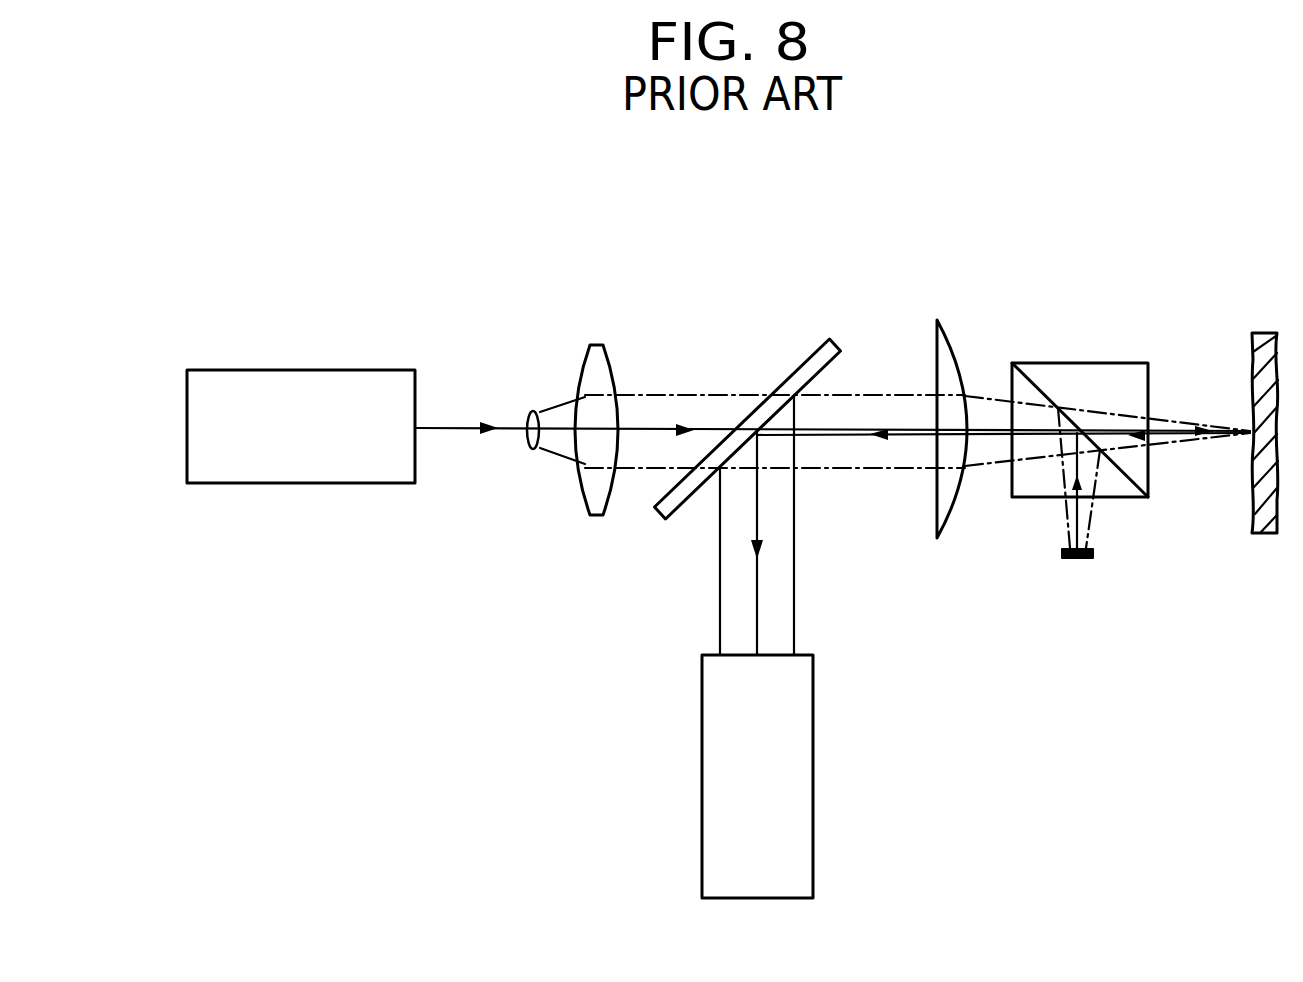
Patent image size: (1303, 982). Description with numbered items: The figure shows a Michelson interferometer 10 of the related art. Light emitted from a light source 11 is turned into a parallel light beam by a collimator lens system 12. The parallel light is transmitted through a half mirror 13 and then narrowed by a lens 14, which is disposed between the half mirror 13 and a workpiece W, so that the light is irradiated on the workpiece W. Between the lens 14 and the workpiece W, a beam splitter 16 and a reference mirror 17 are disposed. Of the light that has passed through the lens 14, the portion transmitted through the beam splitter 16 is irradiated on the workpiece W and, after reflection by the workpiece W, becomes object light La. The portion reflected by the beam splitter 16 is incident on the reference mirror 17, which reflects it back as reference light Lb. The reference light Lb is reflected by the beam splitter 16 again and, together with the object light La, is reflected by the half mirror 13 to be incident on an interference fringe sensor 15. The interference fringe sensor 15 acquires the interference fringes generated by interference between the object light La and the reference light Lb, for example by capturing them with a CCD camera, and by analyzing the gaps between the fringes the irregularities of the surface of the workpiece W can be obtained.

The Michelson interferometer 10 is at (1040, 272).
The light source 11 is at (354, 370).
The collimator lens system 12 is at (607, 315).
The half mirror 13 is at (810, 348).
The lens 14 is at (949, 344).
The interference fringe sensor 15 is at (813, 816).
The beam splitter 16 is at (1105, 362).
The reference mirror 17 is at (1080, 559).
The workpiece W is at (1262, 332).
The object light La is at (1135, 440).
The reference light Lb is at (1068, 501).